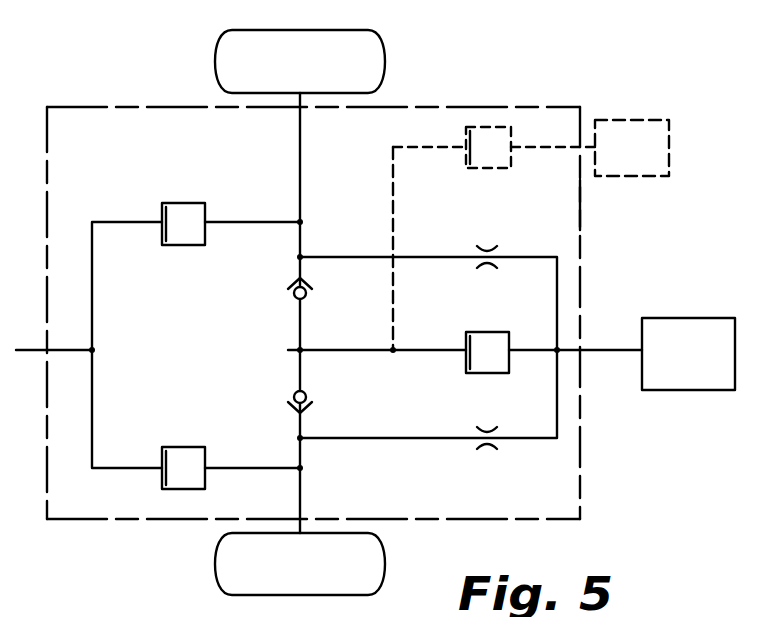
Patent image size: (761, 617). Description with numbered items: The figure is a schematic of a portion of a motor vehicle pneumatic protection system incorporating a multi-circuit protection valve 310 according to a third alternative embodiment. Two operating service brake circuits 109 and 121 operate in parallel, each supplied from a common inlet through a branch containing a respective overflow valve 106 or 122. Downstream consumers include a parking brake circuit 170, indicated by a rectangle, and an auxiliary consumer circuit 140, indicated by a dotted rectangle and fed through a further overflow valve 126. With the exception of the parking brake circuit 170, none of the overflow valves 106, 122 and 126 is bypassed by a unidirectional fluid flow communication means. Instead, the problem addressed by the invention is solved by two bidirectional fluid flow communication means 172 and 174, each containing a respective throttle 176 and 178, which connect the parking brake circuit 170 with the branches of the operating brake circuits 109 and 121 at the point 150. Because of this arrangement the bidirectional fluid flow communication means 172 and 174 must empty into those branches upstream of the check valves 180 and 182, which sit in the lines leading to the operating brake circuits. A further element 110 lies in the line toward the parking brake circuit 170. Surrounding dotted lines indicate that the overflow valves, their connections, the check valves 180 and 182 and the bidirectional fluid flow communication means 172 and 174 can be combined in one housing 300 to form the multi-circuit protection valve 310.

The operating brake circuit 121 is at (364, 73).
The operating brake circuit 109 is at (236, 579).
The multi-circuit protection valve 310 is at (455, 100).
The housing 300 is at (562, 200).
The auxiliary consumer circuit 140 is at (634, 132).
The overflow valve 126 is at (498, 157).
The overflow valve 122 is at (192, 222).
The overflow valve 106 is at (196, 466).
The pump 110 is at (496, 344).
The parking brake circuit 170 is at (684, 372).
The bidirectional fluid flow communication means 174 is at (543, 257).
The bidirectional fluid flow communication means 172 is at (543, 438).
The throttle 178 is at (487, 246).
The throttle 176 is at (487, 449).
The check valve 182 is at (305, 297).
The check valve 180 is at (305, 393).
The point 150 is at (274, 350).